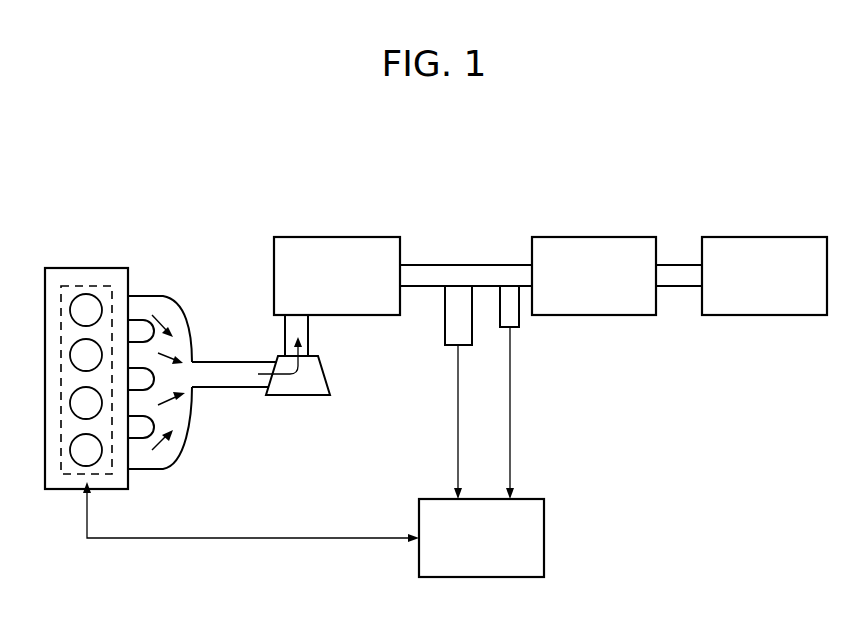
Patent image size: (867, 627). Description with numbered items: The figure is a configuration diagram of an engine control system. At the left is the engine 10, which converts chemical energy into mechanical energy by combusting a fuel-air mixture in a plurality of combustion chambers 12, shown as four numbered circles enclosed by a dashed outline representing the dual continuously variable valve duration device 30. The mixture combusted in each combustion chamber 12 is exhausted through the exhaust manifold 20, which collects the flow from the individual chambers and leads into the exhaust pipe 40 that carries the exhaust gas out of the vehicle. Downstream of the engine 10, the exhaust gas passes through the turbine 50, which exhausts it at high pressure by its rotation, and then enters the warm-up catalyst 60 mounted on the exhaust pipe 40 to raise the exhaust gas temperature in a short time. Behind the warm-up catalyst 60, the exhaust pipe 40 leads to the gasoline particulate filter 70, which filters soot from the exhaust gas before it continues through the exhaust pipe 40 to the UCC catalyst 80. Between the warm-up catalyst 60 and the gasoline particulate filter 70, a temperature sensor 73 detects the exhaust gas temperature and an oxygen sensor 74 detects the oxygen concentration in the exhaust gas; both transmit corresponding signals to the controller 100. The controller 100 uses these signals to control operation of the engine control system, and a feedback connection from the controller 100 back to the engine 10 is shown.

The engine 10 is at (118, 246).
The combustion chamber 12 is at (84, 290).
The exhaust manifold 20 is at (150, 296).
The dual continuously variable valve duration device 30 is at (65, 480).
The exhaust pipe 40 is at (226, 370).
The turbine 50 is at (320, 398).
The warm-up catalyst 60 is at (370, 237).
The gasoline particulate filter 70 is at (573, 237).
The temperature sensor 73 is at (458, 300).
The oxygen sensor 74 is at (510, 296).
The UCC catalyst 80 is at (755, 237).
The controller 100 is at (544, 538).